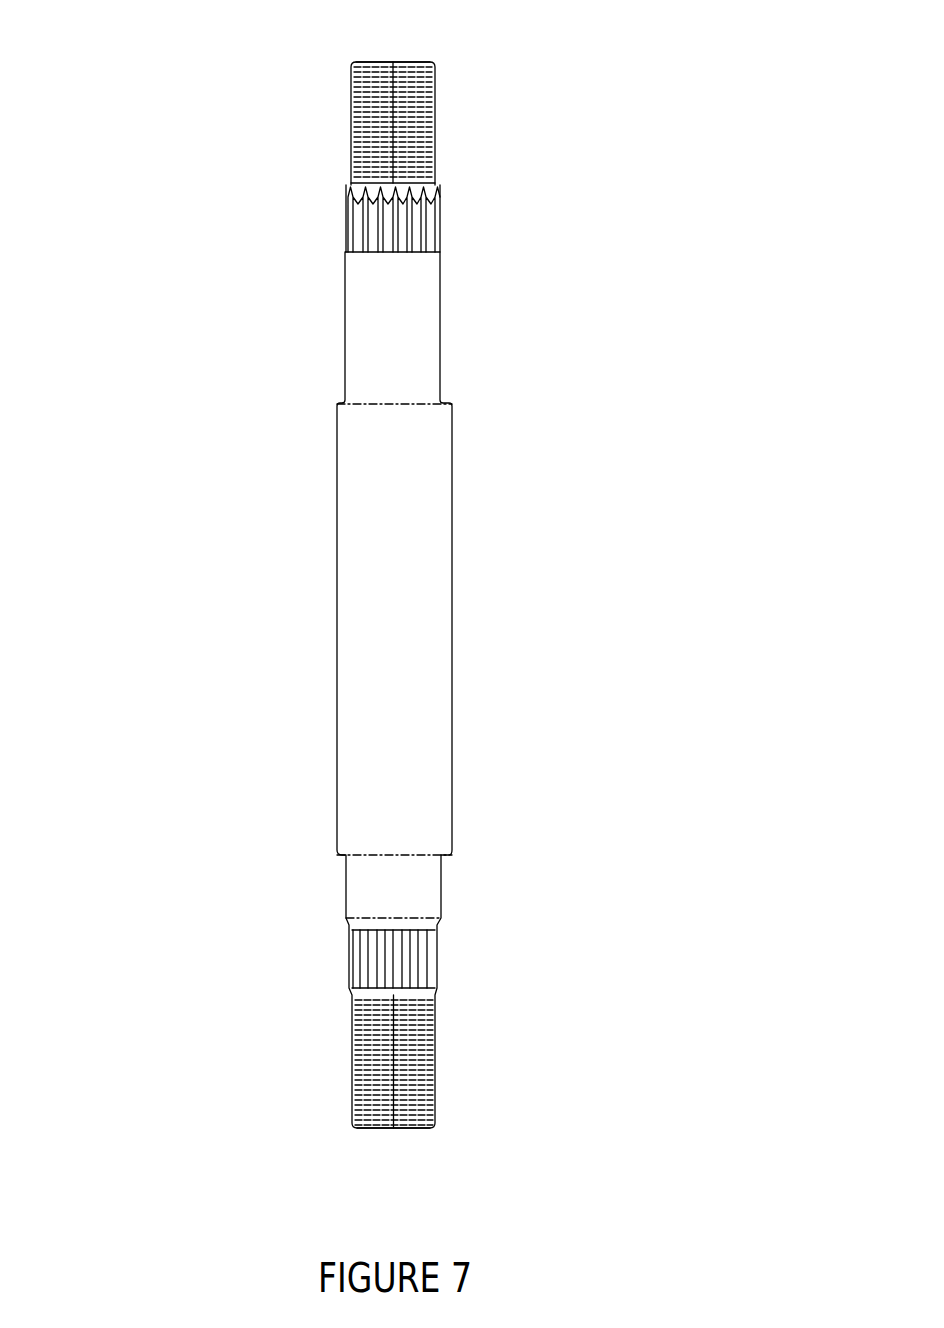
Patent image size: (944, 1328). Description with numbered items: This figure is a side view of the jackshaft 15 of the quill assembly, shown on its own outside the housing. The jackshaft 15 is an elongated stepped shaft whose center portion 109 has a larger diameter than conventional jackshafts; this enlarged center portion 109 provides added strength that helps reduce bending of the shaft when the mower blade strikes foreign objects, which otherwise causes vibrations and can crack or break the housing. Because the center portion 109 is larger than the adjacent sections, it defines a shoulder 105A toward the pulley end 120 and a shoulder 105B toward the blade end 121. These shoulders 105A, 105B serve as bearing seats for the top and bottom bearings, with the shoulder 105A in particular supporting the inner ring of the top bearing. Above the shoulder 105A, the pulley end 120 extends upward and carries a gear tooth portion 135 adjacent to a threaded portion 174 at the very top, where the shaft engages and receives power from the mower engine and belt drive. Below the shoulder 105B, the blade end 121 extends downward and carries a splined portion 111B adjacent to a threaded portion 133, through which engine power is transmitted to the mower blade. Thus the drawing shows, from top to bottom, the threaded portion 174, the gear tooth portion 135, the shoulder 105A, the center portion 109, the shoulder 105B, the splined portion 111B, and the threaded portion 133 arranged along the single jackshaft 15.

The jackshaft 15 is at (415, 574).
The pulley end 120 is at (452, 51).
The threaded portion 174 is at (453, 130).
The gear tooth portion 135 is at (332, 233).
The shoulder 105A is at (465, 410).
The center portion 109 is at (428, 565).
The shoulder 105B is at (470, 863).
The splined portion 111B is at (450, 963).
The threaded portion 133 is at (340, 1058).
The blade end 121 is at (460, 1136).